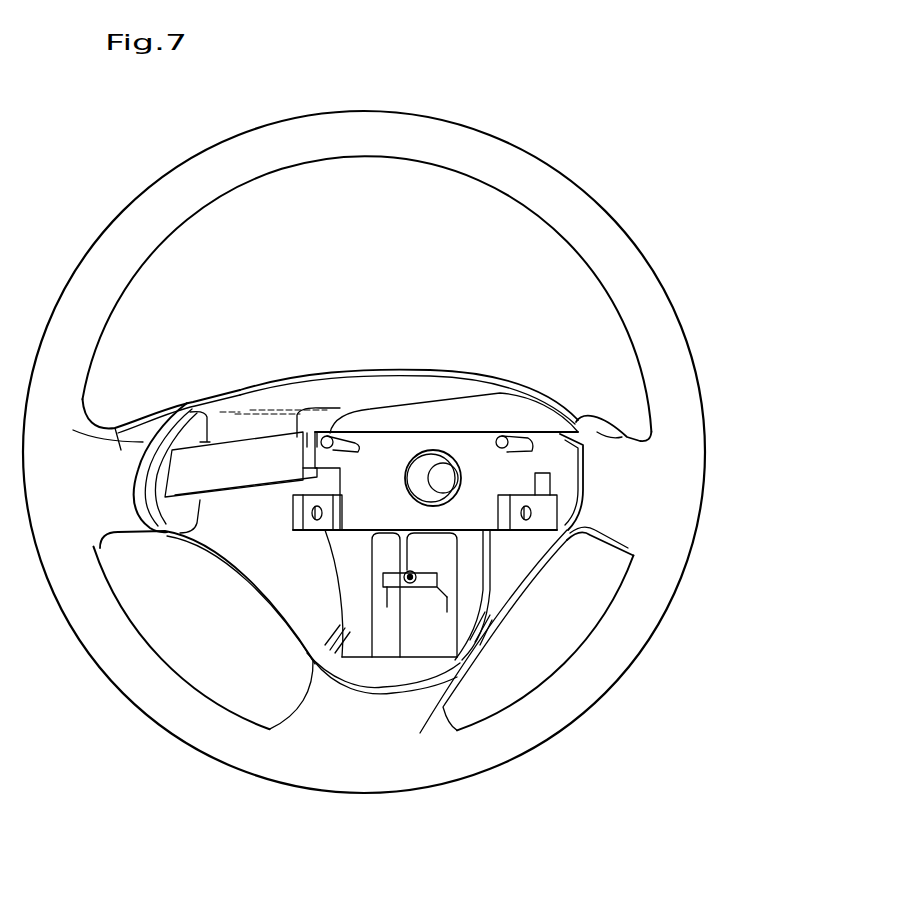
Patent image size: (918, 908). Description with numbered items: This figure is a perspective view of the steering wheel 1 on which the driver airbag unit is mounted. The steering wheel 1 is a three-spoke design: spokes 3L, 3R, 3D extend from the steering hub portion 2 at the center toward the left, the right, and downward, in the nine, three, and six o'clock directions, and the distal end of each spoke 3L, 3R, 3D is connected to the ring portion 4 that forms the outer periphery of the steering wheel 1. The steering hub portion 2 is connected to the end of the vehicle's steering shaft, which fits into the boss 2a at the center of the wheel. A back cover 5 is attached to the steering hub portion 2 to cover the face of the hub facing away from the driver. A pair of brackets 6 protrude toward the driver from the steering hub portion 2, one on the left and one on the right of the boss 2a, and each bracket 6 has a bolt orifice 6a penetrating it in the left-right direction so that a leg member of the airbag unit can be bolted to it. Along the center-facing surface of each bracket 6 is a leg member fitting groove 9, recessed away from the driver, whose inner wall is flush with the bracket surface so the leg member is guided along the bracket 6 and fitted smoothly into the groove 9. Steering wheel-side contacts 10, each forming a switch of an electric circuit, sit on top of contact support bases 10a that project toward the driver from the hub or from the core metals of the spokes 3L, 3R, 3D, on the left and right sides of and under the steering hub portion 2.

The steering wheel 1 is at (515, 127).
The steering hub portion 2 is at (488, 393).
The boss 2a is at (455, 472).
The spoke 3L is at (113, 427).
The spoke 3R is at (613, 420).
The spoke 3D is at (314, 704).
The ring portion 4 is at (165, 190).
The back cover 5 is at (333, 373).
The bracket 6 is at (293, 512).
The bolt orifice 6a is at (313, 527).
The leg member fitting groove 9 is at (340, 512).
The steering wheel-side contact 10 is at (298, 430).
The contact support base 10a is at (363, 437).